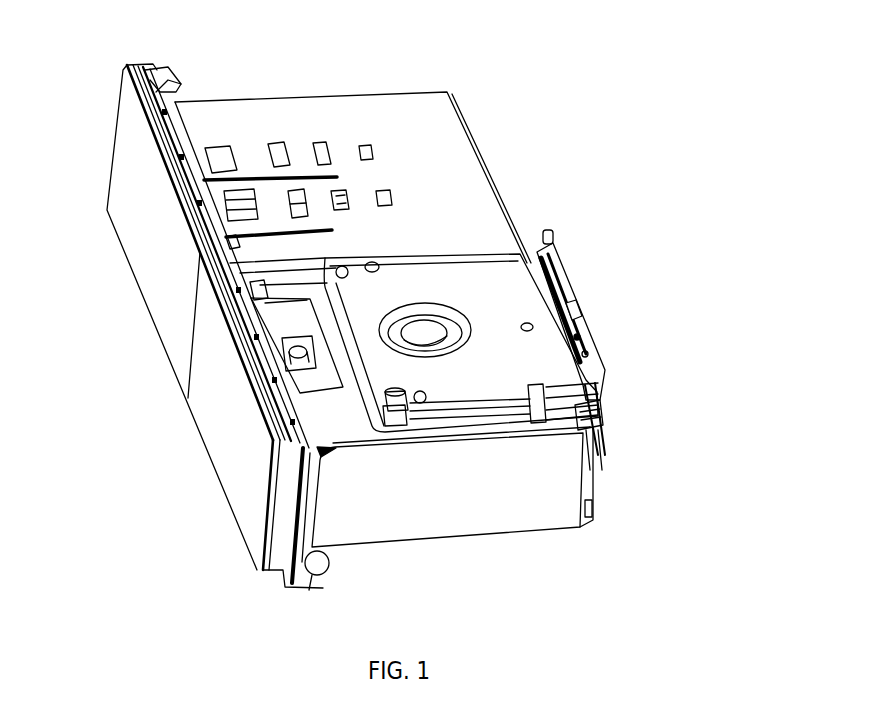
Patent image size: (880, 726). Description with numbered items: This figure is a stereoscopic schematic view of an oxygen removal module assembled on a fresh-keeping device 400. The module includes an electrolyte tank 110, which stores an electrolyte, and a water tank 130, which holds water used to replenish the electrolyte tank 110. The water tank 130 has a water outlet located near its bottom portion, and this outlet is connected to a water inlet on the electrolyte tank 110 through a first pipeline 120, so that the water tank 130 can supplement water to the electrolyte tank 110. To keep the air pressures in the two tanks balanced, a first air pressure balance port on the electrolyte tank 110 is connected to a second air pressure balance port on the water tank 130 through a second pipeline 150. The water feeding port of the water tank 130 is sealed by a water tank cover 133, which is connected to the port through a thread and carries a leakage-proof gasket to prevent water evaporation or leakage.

The electrolyte tank 110 is at (590, 337).
The first pipeline 120 is at (600, 399).
The water tank 130 is at (423, 280).
The water tank cover 133 is at (420, 330).
The second pipeline 150 is at (586, 421).
The fresh-keeping device 400 is at (193, 432).